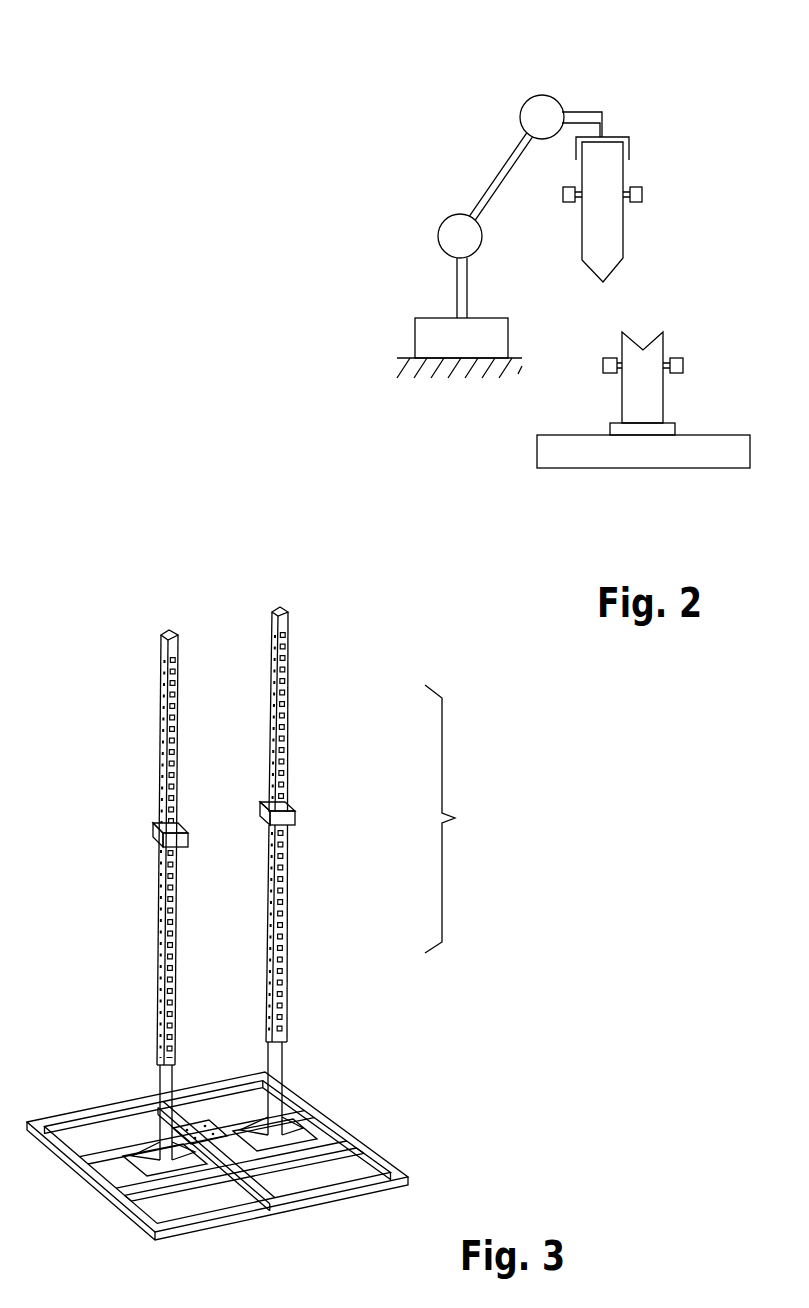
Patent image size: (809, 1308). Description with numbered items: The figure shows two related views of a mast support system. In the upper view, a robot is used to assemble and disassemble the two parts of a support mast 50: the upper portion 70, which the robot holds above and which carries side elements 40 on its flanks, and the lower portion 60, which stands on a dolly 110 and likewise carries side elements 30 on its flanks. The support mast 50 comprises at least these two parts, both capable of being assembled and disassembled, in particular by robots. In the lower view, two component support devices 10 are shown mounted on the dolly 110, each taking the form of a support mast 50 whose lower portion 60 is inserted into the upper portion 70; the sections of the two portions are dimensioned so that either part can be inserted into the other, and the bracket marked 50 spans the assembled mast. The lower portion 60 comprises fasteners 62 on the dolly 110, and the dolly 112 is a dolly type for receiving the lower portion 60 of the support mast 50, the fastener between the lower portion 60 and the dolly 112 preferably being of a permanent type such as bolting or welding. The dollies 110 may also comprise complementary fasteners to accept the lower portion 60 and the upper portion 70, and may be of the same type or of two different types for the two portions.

In FIG. 2, the clamping element of board 40 is at (646, 192).
In FIG. 2, the upper portion 70 is at (620, 250).
In FIG. 3, the upper portion 70 is at (289, 740).
In FIG. 2, the clamping element of fixture 30 is at (688, 364).
In FIG. 2, the lower portion 60 is at (657, 405).
In FIG. 3, the lower portion 60 is at (289, 897).
In FIG. 2, the dolly 110 is at (537, 457).
In FIG. 3, the component support device 10 is at (181, 628).
In FIG. 3, the support mast 50 is at (459, 819).
In FIG. 3, the fastener 62 is at (297, 1116).
In FIG. 3, the dolly 112 is at (374, 1141).